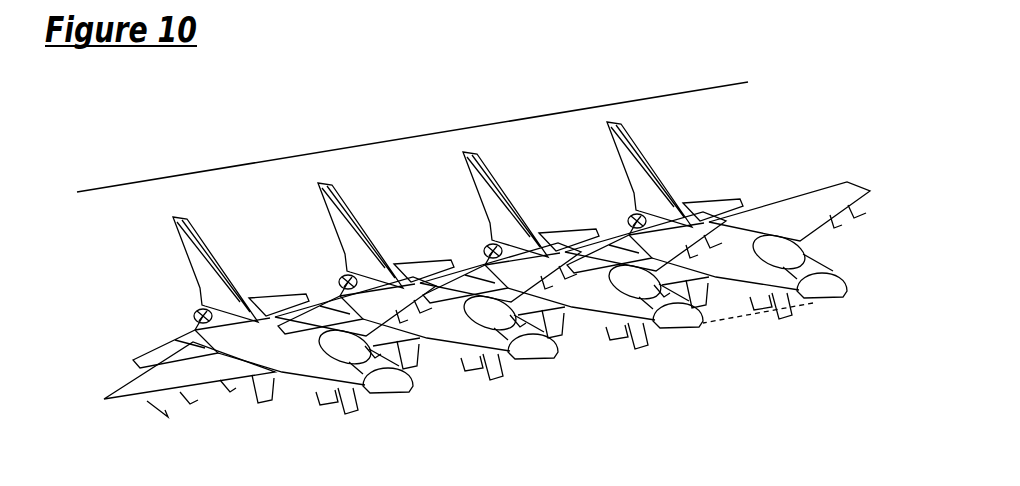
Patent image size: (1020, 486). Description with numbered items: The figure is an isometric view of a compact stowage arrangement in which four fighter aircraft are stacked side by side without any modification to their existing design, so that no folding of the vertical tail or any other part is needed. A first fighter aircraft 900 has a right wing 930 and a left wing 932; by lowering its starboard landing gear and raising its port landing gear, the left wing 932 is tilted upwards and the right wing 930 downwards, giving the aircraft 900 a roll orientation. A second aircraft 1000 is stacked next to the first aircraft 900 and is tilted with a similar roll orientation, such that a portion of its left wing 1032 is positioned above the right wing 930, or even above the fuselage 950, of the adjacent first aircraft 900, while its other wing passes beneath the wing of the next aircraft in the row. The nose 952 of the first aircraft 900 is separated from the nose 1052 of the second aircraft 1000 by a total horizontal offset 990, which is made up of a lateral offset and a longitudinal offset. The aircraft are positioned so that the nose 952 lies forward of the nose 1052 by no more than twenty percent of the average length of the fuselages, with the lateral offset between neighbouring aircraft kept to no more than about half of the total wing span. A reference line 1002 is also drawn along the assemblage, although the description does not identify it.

The first fighter aircraft 900 is at (725, 263).
The right wing 930 is at (690, 283).
The left wing 932 is at (820, 188).
The fuselage 950 is at (753, 277).
The nose 952 is at (833, 272).
The total horizontal offset 990 is at (813, 303).
The second aircraft 1000 is at (599, 303).
The deck line 1002 is at (118, 184).
The left wing 1032 is at (620, 222).
The nose 1052 is at (682, 338).